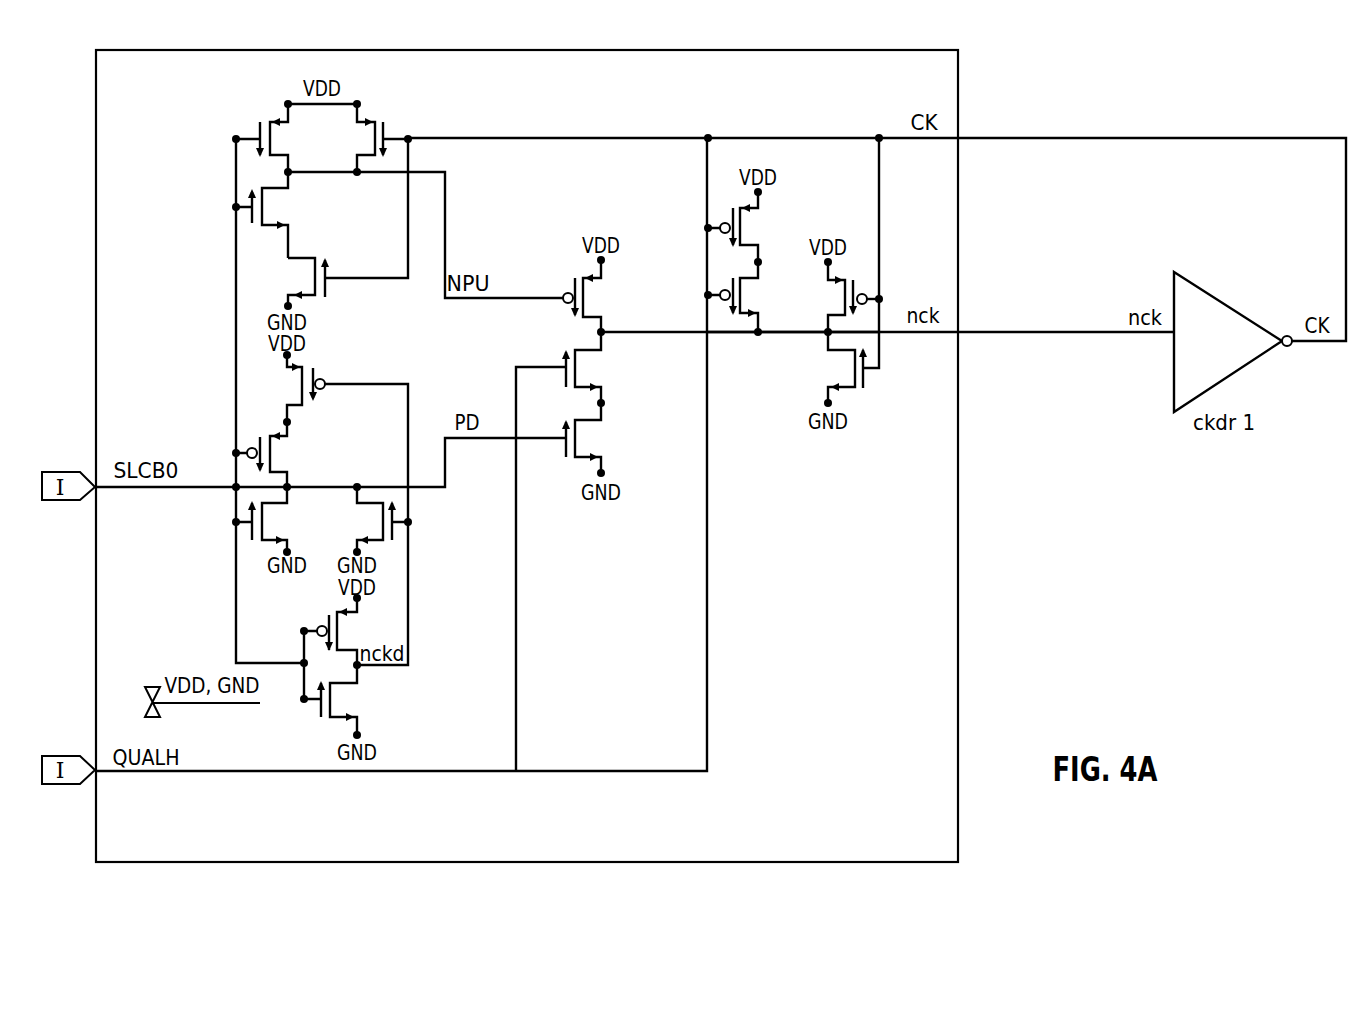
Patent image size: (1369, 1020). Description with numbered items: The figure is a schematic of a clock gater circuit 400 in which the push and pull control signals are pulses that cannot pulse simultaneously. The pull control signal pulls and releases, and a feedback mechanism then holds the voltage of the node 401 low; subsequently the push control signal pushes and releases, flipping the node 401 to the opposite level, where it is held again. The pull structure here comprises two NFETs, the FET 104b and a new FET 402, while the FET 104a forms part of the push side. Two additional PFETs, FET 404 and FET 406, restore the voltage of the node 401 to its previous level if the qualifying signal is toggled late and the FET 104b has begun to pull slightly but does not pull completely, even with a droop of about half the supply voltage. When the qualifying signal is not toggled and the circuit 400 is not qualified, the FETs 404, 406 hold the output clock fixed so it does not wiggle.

The clock gater circuit 400 is at (1177, 689).
The FET 104a is at (578, 272).
The FET 104b is at (570, 463).
The FET 402 is at (598, 368).
The FET 406 is at (750, 224).
The FET 404 is at (750, 295).
The nck node 401 is at (758, 333).